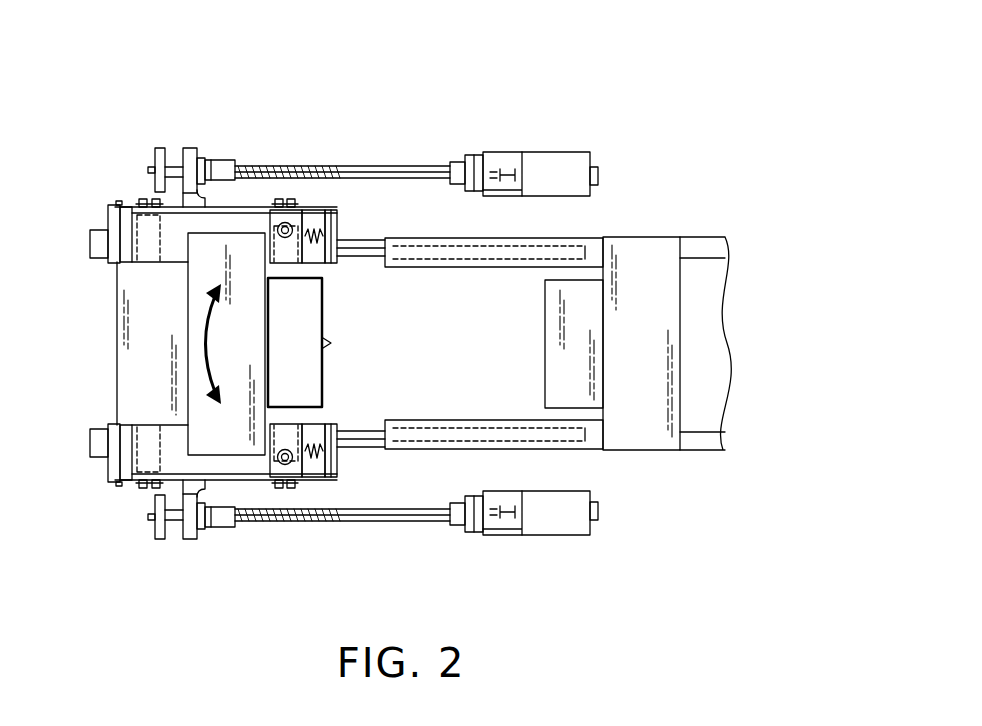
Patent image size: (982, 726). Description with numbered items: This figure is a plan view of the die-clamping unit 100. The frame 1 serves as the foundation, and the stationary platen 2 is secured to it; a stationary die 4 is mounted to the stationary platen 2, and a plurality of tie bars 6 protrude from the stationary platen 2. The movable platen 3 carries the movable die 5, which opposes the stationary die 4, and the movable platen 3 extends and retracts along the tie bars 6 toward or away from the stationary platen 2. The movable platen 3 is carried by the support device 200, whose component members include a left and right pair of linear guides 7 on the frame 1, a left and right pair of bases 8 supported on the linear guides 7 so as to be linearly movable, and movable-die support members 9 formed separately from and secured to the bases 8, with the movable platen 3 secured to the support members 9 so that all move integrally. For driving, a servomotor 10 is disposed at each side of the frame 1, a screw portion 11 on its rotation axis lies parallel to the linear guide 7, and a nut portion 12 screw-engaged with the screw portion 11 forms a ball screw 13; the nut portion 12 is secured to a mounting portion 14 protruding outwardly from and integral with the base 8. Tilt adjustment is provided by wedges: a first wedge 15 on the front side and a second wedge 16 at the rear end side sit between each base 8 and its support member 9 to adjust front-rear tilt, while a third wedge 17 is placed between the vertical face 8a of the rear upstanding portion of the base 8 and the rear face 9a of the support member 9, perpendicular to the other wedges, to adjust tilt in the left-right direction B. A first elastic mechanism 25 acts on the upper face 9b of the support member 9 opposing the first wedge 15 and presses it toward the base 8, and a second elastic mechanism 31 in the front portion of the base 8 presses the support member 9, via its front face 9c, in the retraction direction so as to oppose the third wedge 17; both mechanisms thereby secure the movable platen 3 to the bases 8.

The die-clamping unit 100 is at (480, 72).
The support device 200 is at (110, 188).
The frame 1 is at (588, 237).
The stationary platen 2 is at (656, 243).
The movable platen 3 is at (192, 283).
The left-right direction B is at (200, 343).
The stationary die 4 is at (553, 318).
The movable die 5 is at (318, 374).
The first elastic mechanism 25 is at (331, 343).
The tie bars 6 is at (432, 268).
The linear guides 7 is at (372, 242).
The base 8 is at (308, 212).
The vertical face 8a is at (120, 248).
The movable-die support member 9 is at (245, 222).
The rear face 9a is at (118, 258).
The upper face 9b is at (283, 252).
The front face 9c is at (312, 263).
The servomotor 10 is at (567, 158).
The screw portion 11 is at (330, 163).
The nut portion 12 is at (222, 158).
The ball screw 13 is at (200, 341).
The mounting portion 14 is at (188, 146).
The first wedge 15 is at (286, 197).
The second wedge 16 is at (142, 194).
The third wedge 17 is at (104, 231).
The second elastic mechanism 31 is at (345, 222).